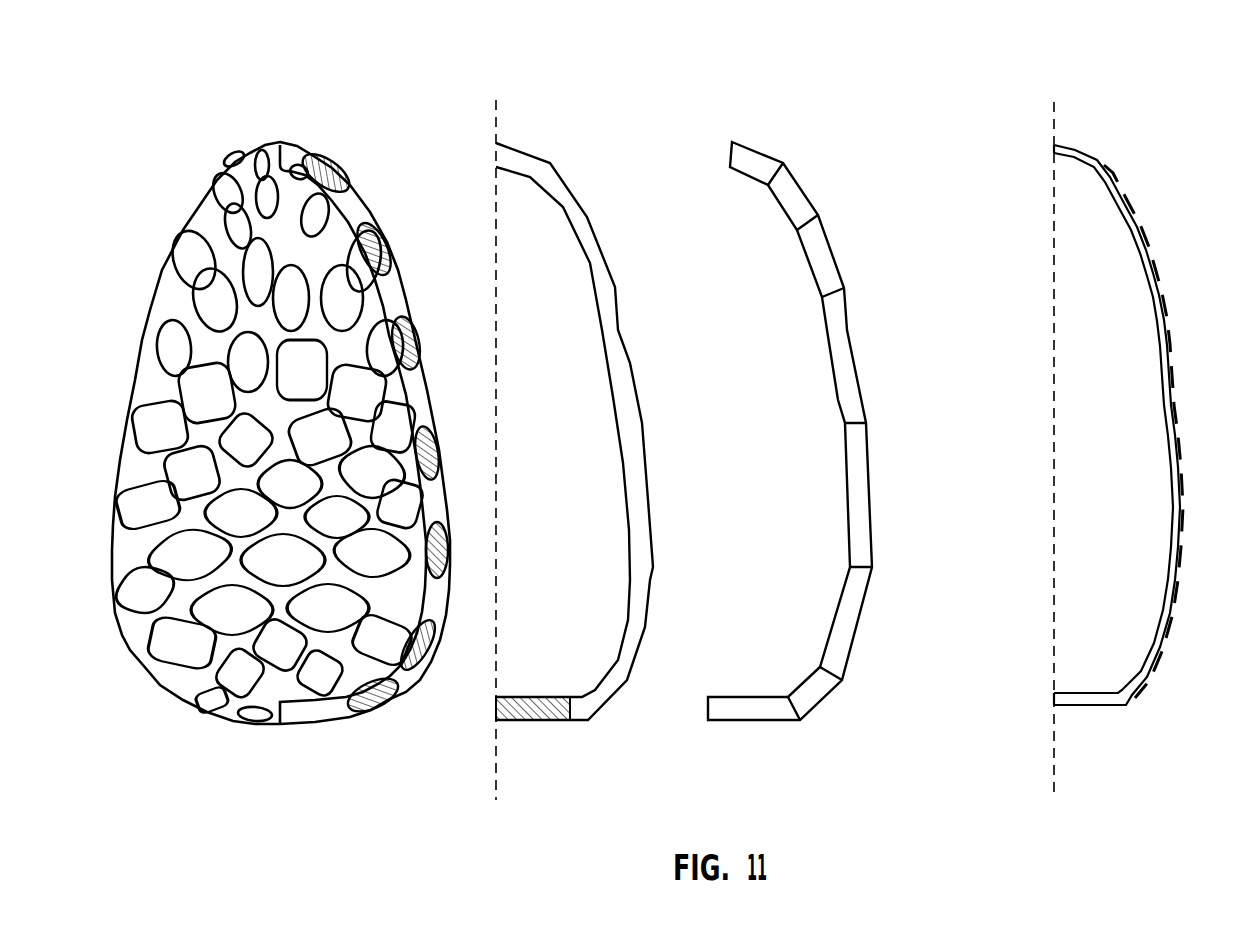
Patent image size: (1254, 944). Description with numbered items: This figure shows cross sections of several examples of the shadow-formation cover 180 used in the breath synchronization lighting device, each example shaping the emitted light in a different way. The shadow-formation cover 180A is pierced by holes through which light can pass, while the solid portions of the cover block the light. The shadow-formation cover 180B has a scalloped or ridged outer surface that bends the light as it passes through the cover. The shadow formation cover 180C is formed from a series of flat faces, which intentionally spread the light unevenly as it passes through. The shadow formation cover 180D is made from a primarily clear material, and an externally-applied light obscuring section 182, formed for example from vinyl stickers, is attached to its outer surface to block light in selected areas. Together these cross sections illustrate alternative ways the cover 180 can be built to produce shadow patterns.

The shadow-formation cover 180 is at (931, 78).
The shadow-formation cover 180A is at (280, 143).
The shadow-formation cover 180B is at (520, 148).
The shadow formation cover 180C is at (758, 148).
The shadow formation cover 180D is at (1068, 143).
The light obscuring section 182 is at (348, 213).